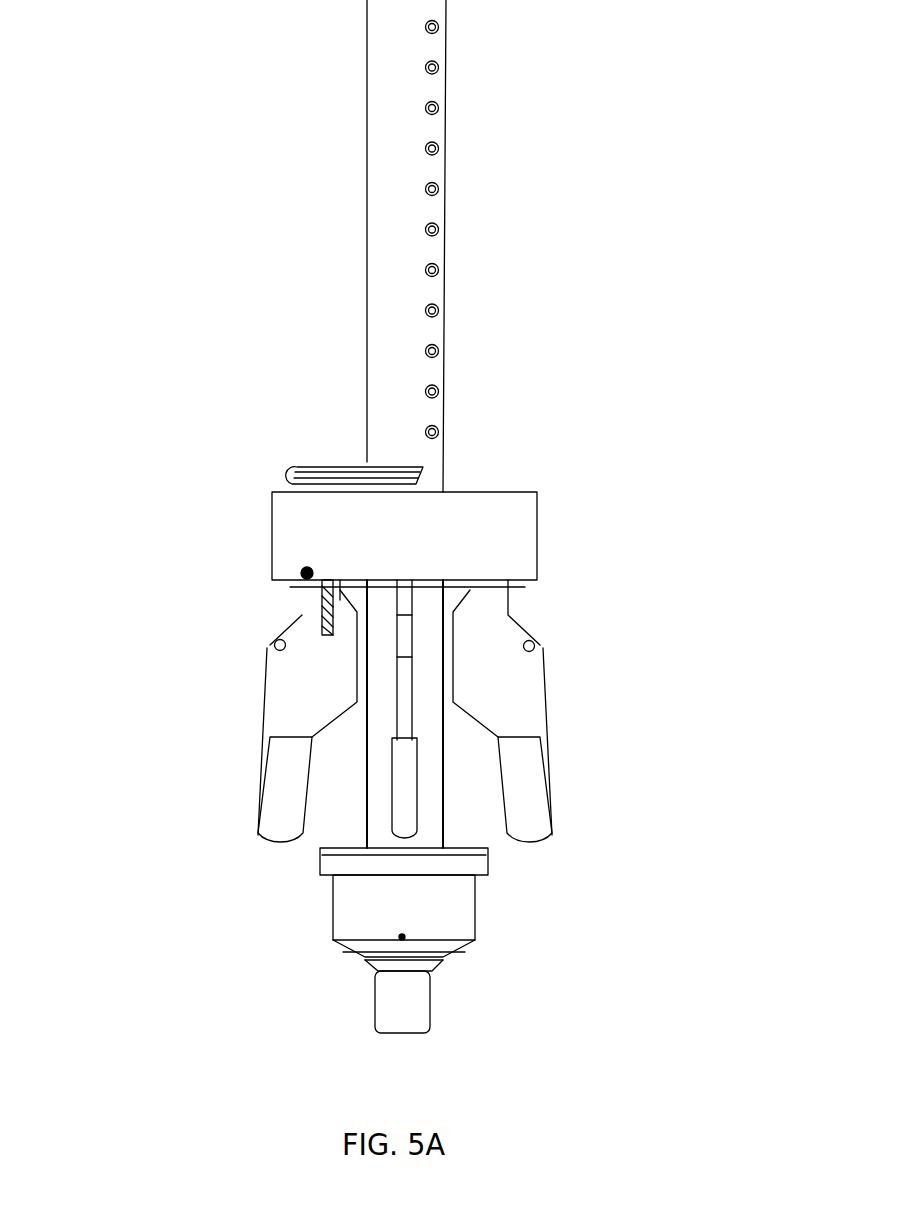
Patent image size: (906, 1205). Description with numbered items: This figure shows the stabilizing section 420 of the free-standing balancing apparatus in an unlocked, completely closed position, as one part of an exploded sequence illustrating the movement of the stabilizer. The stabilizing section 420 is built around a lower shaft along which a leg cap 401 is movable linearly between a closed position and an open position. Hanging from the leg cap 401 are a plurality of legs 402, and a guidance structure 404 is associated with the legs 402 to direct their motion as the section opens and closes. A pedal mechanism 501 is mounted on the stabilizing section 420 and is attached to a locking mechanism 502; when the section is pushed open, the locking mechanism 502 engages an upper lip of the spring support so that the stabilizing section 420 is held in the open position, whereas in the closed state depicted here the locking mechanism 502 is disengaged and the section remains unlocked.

The stabilizing section 420 is at (517, 460).
The leg cap 401 is at (545, 520).
The legs 402 is at (471, 789).
The guidance structure 404 is at (406, 662).
The pedal mechanism 501 is at (310, 458).
The locking mechanism 502 is at (320, 602).